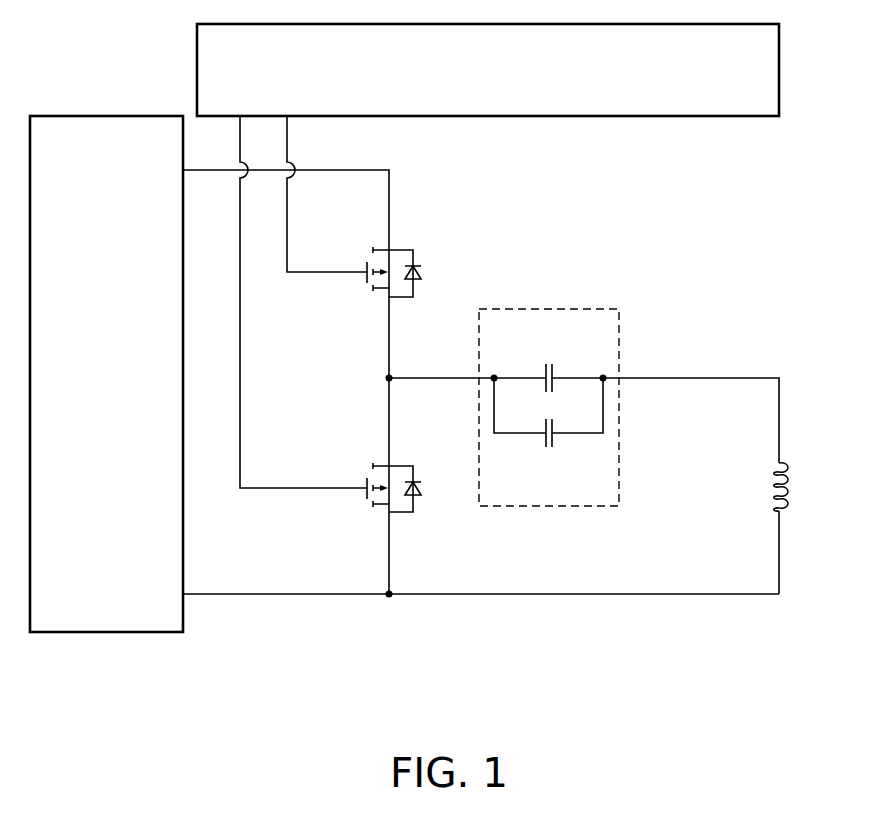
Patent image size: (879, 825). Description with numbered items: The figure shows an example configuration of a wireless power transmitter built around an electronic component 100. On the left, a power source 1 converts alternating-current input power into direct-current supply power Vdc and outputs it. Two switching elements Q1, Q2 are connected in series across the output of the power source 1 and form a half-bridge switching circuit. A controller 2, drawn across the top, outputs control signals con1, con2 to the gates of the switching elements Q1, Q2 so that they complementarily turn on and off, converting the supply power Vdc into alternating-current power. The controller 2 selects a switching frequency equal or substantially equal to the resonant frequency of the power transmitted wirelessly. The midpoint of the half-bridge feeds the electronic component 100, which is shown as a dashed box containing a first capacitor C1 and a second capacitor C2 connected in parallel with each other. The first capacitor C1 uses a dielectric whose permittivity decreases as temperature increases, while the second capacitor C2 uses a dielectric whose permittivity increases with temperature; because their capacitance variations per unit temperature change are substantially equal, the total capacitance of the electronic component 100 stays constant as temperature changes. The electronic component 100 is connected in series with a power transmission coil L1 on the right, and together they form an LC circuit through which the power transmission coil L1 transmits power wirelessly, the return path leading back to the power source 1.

The power source 1 is at (66, 116).
The controller 2 is at (779, 70).
The electronic component 100 is at (549, 377).
The first switching element Q1 is at (376, 264).
The second switching element Q2 is at (376, 479).
The control signal con1 is at (324, 291).
The control signal con2 is at (324, 508).
The first capacitor C1 is at (547, 361).
The second capacitor C2 is at (548, 431).
The power transmission coil L1 is at (799, 487).